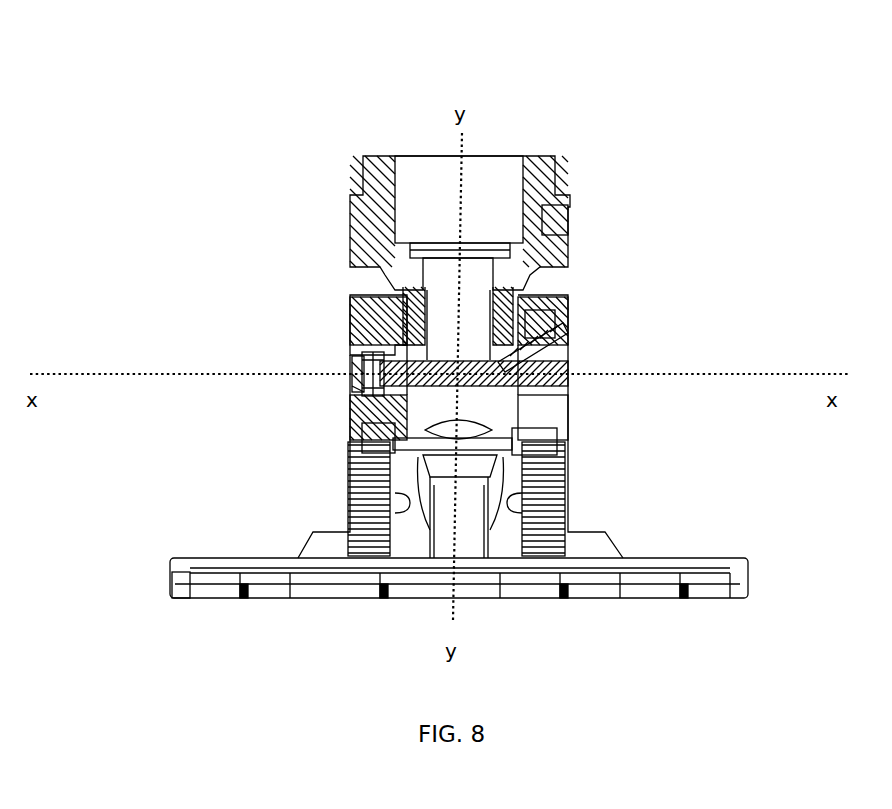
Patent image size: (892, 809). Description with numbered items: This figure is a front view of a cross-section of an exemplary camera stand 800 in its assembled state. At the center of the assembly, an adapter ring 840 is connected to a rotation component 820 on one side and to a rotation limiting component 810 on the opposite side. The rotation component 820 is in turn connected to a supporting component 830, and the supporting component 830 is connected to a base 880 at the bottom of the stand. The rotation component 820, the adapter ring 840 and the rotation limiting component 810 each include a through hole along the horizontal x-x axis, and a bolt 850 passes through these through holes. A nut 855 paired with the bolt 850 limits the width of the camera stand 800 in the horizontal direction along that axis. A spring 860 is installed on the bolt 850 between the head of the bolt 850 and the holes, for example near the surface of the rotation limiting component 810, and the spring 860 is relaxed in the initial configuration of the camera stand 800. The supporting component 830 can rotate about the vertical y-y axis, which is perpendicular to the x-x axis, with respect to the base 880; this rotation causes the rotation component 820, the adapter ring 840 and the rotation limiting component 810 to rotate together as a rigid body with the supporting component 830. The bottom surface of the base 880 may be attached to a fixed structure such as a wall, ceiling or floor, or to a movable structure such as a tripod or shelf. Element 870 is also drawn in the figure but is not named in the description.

The camera stand 800 is at (235, 70).
The rotation limiting component 810 is at (568, 437).
The rotation component 820 is at (570, 198).
The supporting component 830 is at (350, 310).
The adapter ring 840 is at (568, 316).
The bolt 850 is at (568, 375).
The nut 855 is at (350, 383).
The spring 860 is at (568, 357).
The bushing 870 is at (350, 357).
The base 880 is at (236, 568).